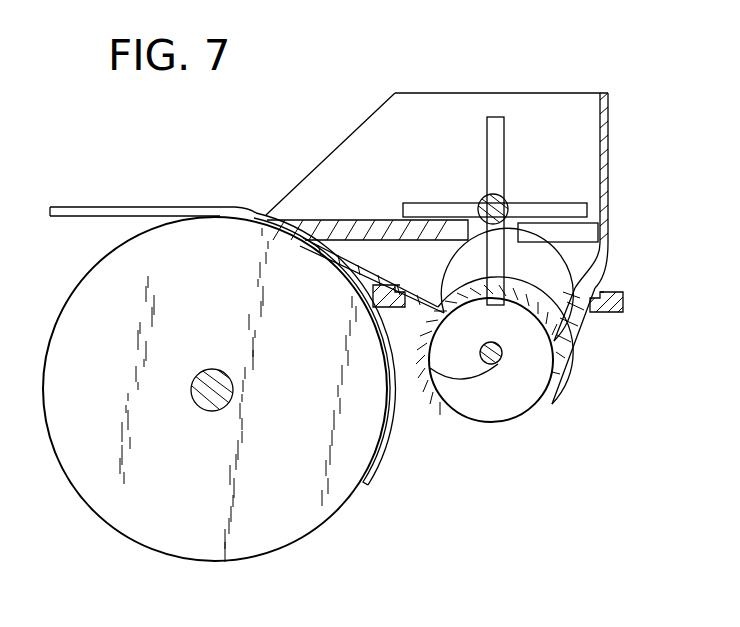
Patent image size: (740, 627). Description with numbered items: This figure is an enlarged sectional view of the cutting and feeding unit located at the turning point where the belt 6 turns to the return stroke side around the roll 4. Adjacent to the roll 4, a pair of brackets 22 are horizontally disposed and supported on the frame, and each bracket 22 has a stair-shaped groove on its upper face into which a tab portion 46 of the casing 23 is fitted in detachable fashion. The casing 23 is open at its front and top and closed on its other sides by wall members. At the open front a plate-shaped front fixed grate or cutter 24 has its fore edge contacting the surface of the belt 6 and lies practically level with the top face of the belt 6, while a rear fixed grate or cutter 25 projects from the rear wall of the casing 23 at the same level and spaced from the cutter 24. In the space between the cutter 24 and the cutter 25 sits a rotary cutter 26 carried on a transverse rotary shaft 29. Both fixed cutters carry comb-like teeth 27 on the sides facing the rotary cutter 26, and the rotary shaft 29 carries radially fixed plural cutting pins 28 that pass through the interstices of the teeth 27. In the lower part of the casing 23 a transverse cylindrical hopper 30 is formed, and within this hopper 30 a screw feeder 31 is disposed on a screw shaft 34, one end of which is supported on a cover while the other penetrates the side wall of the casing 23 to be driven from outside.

The roll 4 is at (107, 280).
The belt 6 is at (108, 207).
The bracket 22 is at (394, 307).
The casing 23 is at (610, 172).
The front fixed grate or cutter 24 is at (354, 222).
The rear fixed grate or cutter 25 is at (576, 249).
The rotary cutter 26 is at (497, 110).
The teeth 27 is at (421, 232).
The cutting pins 28 is at (441, 203).
The rotary shaft 29 is at (501, 200).
The hopper 30 is at (566, 384).
The screw feeder 31 is at (492, 416).
The screw shaft 34 is at (501, 356).
The tab portion 46 is at (400, 297).